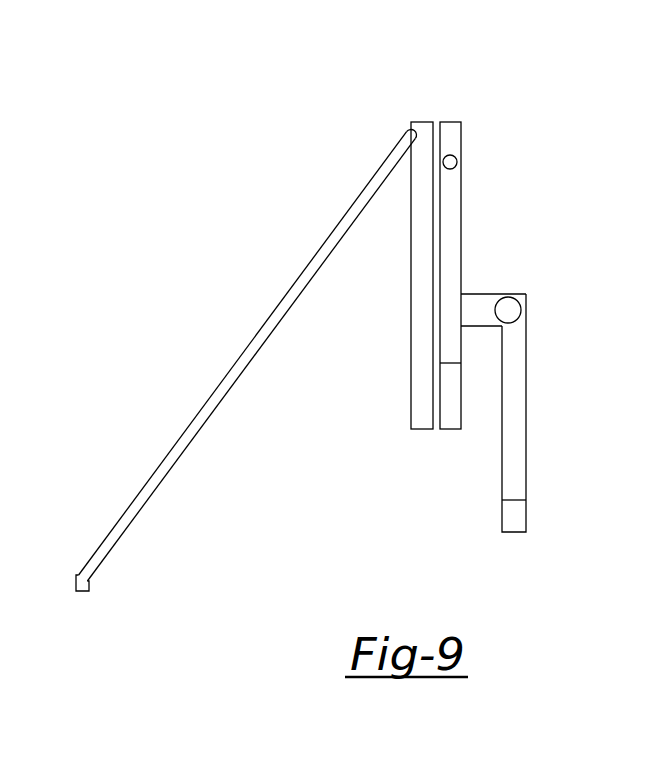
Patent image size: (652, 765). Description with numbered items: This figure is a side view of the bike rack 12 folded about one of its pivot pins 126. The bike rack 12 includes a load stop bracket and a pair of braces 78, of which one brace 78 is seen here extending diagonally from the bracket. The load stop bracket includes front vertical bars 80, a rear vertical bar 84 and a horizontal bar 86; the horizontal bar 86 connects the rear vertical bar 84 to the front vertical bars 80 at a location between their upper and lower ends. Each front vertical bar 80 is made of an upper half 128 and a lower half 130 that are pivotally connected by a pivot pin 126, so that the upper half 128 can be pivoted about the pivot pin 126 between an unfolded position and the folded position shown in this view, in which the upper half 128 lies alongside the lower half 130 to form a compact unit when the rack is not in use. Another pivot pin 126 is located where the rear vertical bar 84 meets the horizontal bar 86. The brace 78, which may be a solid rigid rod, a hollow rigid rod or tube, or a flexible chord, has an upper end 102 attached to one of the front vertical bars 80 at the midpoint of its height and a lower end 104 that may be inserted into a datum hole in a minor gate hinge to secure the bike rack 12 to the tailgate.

The bike rack 12 is at (443, 75).
The brace 78 is at (283, 308).
The front vertical bar 80 is at (462, 195).
The rear vertical bar 84 is at (520, 409).
The horizontal bar 86 is at (484, 300).
The upper end 102 is at (411, 145).
The lower end 104 is at (76, 589).
The pivot pin 126 is at (453, 162).
The upper half 128 is at (420, 383).
The lower half 130 is at (452, 228).